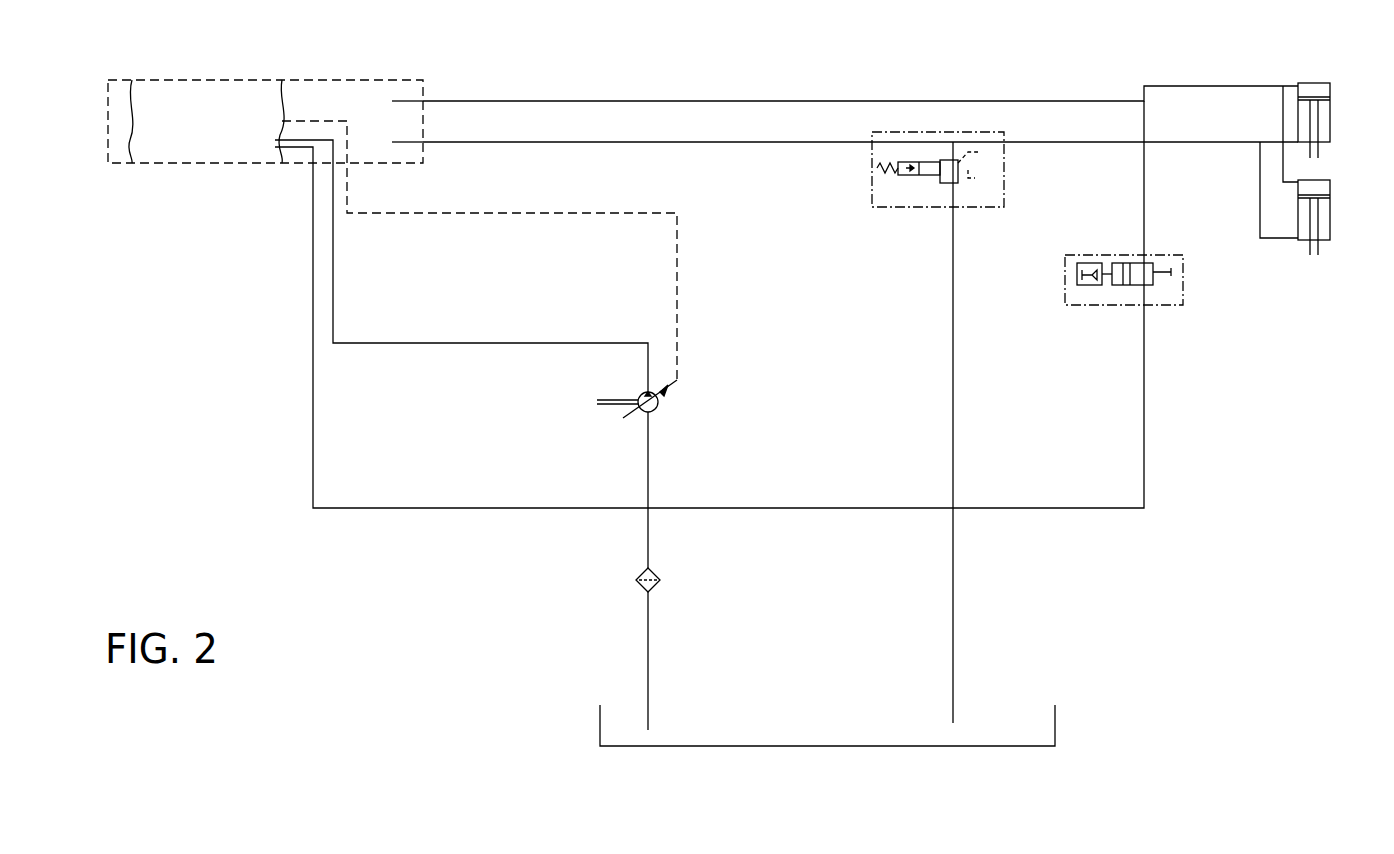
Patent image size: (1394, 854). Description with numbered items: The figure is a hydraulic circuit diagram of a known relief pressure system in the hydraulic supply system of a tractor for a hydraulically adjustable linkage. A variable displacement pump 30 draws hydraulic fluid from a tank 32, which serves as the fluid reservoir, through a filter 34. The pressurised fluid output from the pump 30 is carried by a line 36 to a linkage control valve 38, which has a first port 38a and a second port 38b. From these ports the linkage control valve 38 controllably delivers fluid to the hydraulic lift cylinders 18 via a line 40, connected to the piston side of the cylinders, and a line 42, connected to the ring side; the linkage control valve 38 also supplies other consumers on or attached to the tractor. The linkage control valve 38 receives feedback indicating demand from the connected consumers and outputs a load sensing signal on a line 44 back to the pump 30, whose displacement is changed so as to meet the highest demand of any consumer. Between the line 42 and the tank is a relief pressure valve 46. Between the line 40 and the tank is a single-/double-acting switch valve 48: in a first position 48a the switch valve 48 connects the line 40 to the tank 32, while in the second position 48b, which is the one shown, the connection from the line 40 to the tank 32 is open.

The hydraulic lift cylinders 18 is at (1325, 147).
The variable displacement pump 30 is at (660, 408).
The tank 32 is at (600, 723).
The filter 34 is at (660, 585).
The line 36 is at (445, 342).
The linkage control valve 38 is at (288, 80).
The first port 38a is at (425, 143).
The second port 38b is at (425, 101).
The line 40 is at (495, 101).
The line 42 is at (495, 142).
The load sensing signal line 44 is at (678, 283).
The relief pressure valve 46 is at (893, 208).
The single-/double-acting switch valve 48 is at (1148, 286).
The first position 48a is at (1117, 263).
The second position 48b is at (1153, 263).